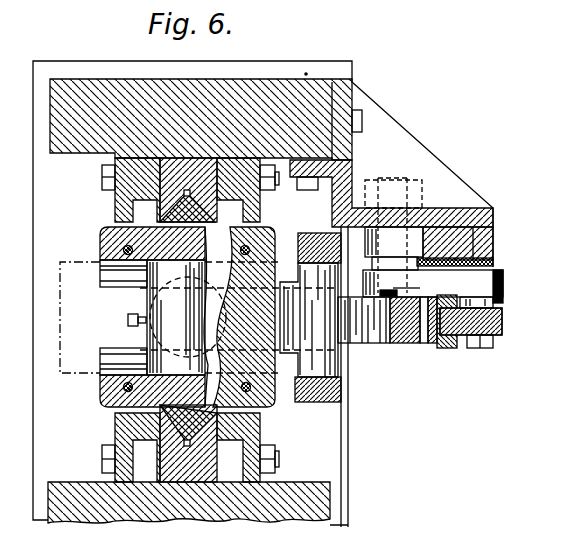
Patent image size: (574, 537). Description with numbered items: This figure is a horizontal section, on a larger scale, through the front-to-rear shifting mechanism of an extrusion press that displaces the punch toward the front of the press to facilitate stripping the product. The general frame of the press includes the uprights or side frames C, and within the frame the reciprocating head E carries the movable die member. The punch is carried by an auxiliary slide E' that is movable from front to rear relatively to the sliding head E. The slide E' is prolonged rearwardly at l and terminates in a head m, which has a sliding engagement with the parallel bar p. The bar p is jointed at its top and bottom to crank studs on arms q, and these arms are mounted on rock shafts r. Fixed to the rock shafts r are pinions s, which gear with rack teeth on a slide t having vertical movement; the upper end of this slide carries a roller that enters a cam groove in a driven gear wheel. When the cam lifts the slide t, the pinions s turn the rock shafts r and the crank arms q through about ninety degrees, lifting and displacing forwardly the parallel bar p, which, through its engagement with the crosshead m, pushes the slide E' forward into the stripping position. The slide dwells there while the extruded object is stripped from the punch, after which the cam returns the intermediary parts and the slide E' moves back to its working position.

The upright C is at (97, 127).
The reciprocating head E is at (247, 334).
The auxiliary slide E' is at (186, 317).
The pinion s is at (394, 248).
The arm q is at (432, 280).
The slide t is at (452, 245).
The rock shaft r is at (383, 299).
The rearward prolongation l is at (382, 318).
The head m is at (450, 345).
The parallel bar p is at (483, 320).